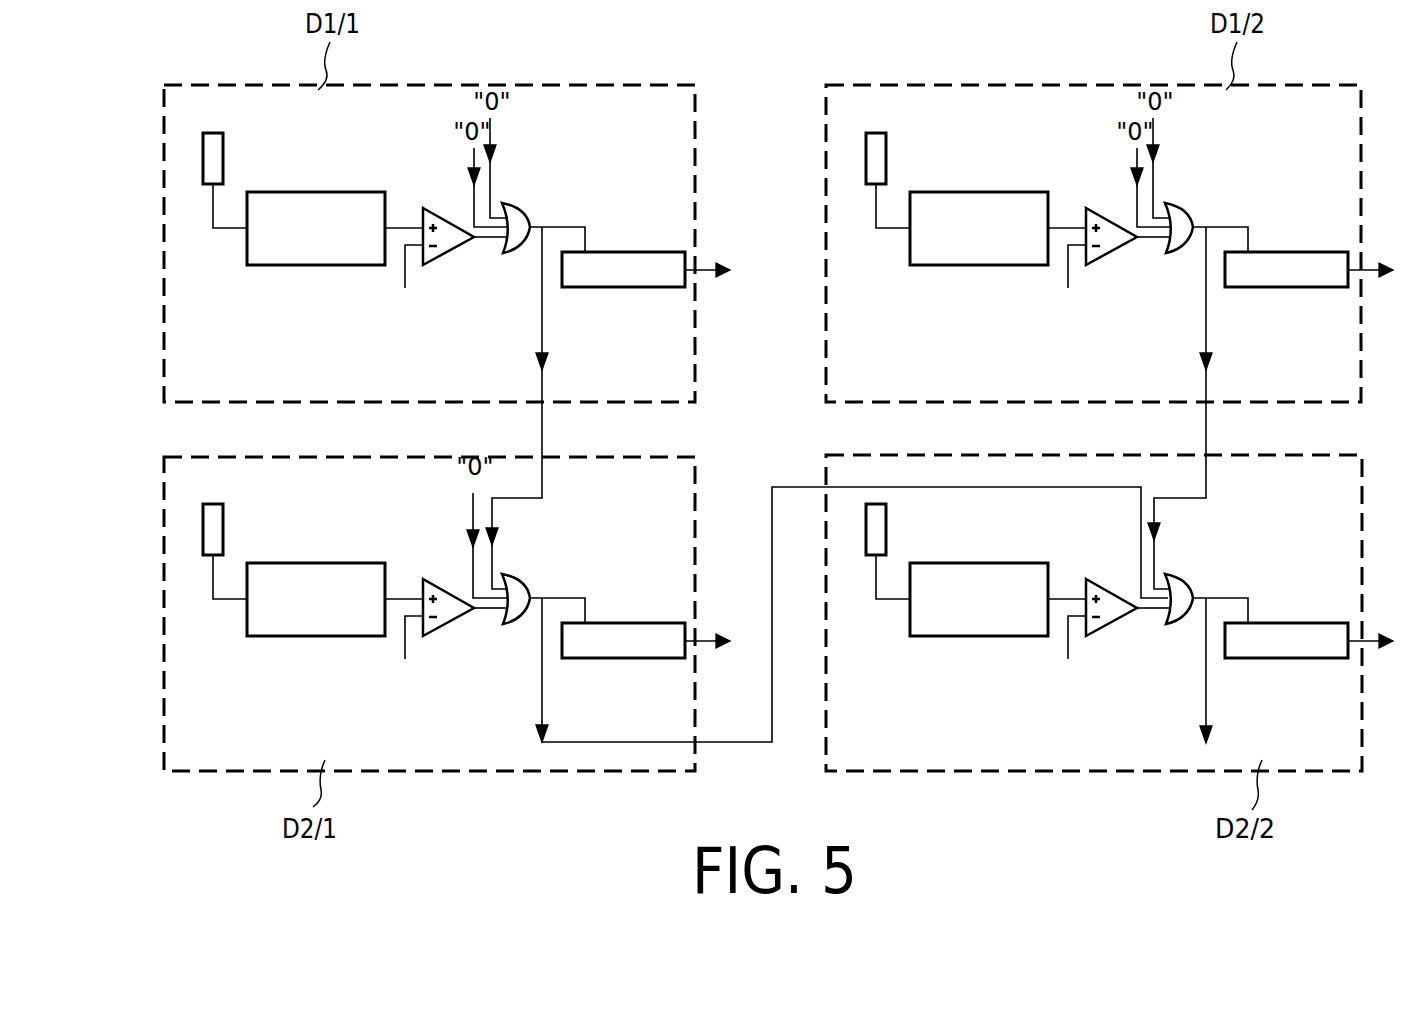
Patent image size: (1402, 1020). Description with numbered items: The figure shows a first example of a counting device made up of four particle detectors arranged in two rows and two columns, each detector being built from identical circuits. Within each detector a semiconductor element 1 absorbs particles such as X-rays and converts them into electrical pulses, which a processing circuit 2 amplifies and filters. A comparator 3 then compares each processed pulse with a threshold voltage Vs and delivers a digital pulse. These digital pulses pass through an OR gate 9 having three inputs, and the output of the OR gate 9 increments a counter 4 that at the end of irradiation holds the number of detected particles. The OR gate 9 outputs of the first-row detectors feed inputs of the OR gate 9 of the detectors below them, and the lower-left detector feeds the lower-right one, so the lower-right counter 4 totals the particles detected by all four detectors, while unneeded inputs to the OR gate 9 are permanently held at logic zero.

The semiconductor element 1 is at (220, 157).
The processing circuit 2 is at (298, 253).
The comparator 3 is at (455, 243).
The counter 4 is at (647, 258).
The OR gate 9 is at (516, 212).